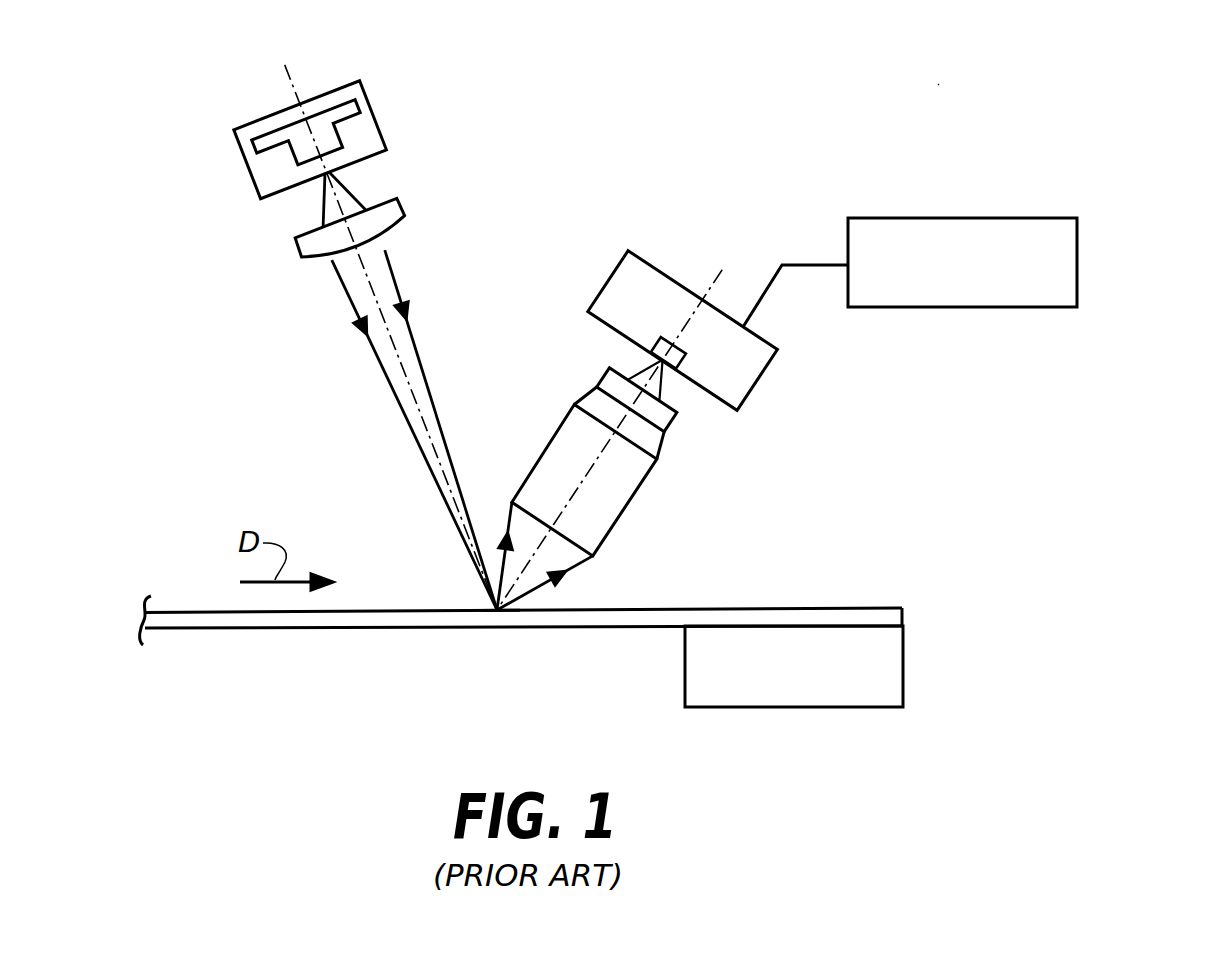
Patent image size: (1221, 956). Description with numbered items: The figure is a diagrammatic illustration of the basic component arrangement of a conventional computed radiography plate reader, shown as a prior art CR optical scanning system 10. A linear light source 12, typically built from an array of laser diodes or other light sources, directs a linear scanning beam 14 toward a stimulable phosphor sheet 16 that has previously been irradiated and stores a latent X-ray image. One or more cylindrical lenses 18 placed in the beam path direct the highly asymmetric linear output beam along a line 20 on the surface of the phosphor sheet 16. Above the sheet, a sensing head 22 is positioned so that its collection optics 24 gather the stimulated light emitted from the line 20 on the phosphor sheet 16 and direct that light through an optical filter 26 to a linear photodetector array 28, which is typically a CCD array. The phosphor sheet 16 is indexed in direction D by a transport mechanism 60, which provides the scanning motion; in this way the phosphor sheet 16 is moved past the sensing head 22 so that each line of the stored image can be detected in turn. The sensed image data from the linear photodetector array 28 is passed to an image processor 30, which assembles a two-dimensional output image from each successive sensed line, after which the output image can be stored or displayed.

The CR optical scanning system 10 is at (943, 80).
The linear light source 12 is at (374, 111).
The linear scanning beam 14 is at (492, 606).
The stimulable phosphor sheet 16 is at (827, 607).
The cylindrical lens 18 is at (400, 210).
The line 20 is at (498, 612).
The sensing head 22 is at (626, 236).
The collection optics 24 is at (633, 503).
The optical filter 26 is at (598, 382).
The linear photodetector array 28 is at (660, 337).
The image processor 30 is at (1077, 262).
The transport mechanism 60 is at (903, 660).